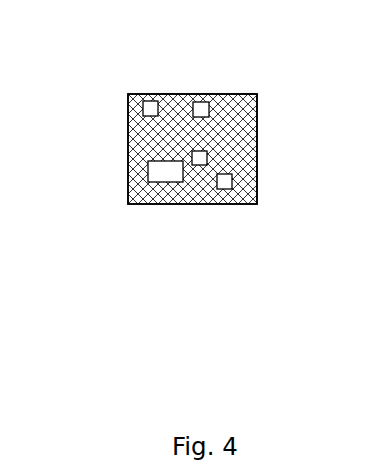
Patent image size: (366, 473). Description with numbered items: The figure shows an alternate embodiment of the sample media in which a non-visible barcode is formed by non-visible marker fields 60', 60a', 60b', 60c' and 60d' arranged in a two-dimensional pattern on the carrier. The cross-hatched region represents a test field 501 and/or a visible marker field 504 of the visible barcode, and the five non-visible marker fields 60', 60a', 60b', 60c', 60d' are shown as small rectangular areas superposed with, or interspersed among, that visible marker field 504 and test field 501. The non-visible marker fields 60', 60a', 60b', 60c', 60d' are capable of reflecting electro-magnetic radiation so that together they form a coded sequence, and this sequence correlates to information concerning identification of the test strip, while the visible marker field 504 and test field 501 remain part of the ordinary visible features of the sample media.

The test field 501 is at (128, 133).
The visible marker field 504 is at (192, 149).
The non-visible marker field 60' is at (136, 208).
The non-visible marker field 60a' is at (189, 71).
The non-visible marker field 60b' is at (251, 71).
The non-visible marker field 60c' is at (258, 132).
The non-visible marker field 60d' is at (245, 215).